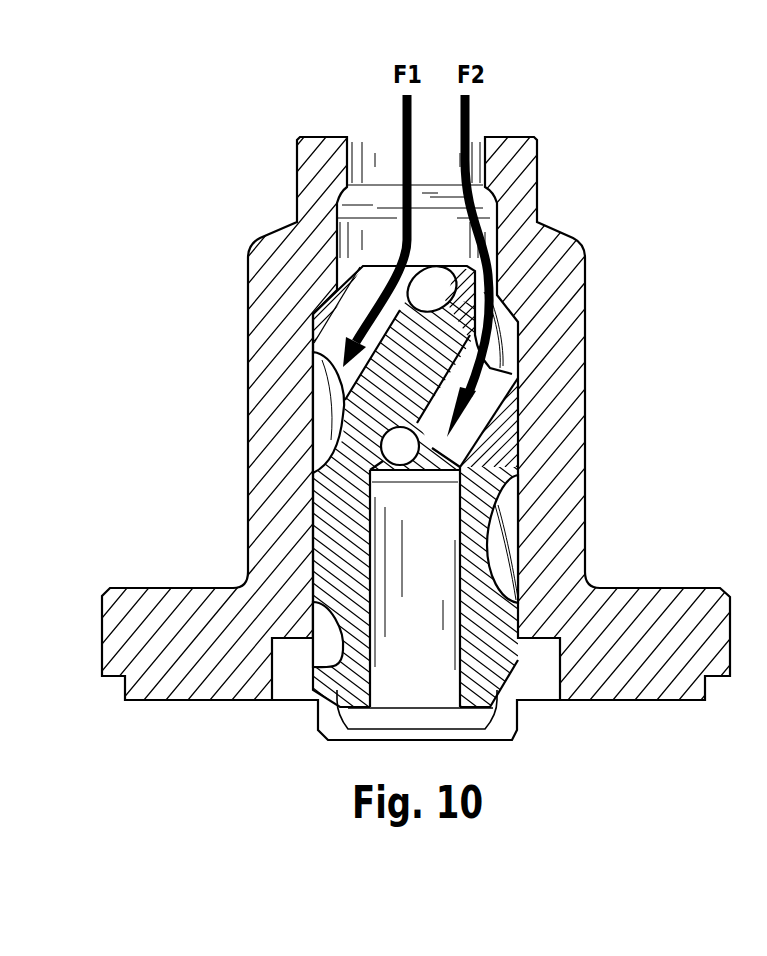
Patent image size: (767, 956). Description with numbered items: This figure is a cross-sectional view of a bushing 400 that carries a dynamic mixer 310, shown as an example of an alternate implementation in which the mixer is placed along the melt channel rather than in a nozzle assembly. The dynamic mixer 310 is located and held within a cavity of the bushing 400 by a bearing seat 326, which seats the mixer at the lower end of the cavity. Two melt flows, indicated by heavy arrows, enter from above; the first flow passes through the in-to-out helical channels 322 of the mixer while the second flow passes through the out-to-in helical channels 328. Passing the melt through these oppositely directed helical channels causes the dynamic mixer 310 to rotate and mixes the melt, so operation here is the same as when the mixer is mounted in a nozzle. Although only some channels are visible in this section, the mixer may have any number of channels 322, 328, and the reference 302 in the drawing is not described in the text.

The inlet passage 302 is at (437, 138).
The dynamic mixer 310 is at (302, 481).
The in-to-out helical channels 322 is at (340, 290).
The bearing seat 326 is at (535, 677).
The out-to-in helical channels 328 is at (495, 388).
The bushing 400 is at (668, 610).